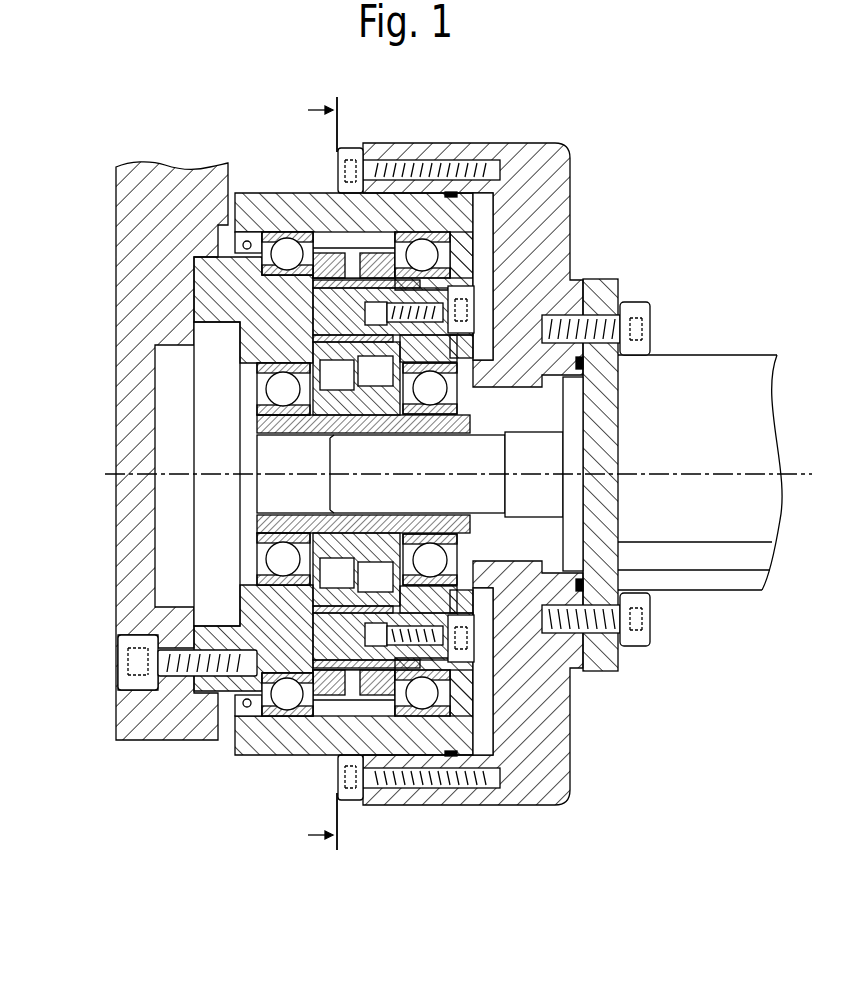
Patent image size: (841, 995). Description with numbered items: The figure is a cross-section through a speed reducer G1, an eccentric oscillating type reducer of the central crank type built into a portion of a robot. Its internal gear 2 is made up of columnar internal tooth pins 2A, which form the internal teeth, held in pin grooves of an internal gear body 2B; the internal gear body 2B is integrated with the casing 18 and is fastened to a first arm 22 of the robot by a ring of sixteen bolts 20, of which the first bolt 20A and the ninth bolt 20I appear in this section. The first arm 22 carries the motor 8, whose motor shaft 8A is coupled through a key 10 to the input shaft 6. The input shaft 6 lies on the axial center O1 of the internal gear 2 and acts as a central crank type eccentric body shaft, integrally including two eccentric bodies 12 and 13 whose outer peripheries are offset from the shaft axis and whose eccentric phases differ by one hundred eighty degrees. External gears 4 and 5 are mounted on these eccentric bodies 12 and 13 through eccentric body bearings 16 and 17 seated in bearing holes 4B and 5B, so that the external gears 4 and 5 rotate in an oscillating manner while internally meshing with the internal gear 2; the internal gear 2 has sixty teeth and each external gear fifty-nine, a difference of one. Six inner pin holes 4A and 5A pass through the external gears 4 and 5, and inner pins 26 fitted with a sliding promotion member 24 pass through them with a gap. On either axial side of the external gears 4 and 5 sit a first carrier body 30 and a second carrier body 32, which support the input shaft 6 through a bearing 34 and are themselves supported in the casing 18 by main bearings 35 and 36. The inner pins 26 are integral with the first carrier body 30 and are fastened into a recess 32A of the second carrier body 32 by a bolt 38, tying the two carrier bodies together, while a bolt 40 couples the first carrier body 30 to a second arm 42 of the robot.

The internal gear 2 is at (362, 195).
The internal tooth pins 2A is at (378, 238).
The internal gear body 2B is at (362, 195).
The casing 18 is at (410, 208).
The external gear 4 is at (341, 236).
The inner pin holes 4A is at (335, 360).
The bearing hole 4B is at (331, 562).
The external gear 5 is at (400, 254).
The inner pin holes 5A is at (458, 264).
The bearing hole 5B is at (376, 562).
The input shaft 6 is at (470, 419).
The motor 8 is at (728, 372).
The motor shaft 8A is at (482, 502).
The key 10 is at (421, 437).
The eccentric body 12 is at (337, 396).
The eccentric body 13 is at (373, 396).
The eccentric body bearing 16 is at (318, 358).
The eccentric body bearing 17 is at (378, 302).
The casing 20 is at (462, 146).
The ninth bolt 20I is at (352, 150).
The first bolt 20A is at (353, 797).
The first arm 22 is at (572, 218).
The sliding promotion member 24 is at (318, 233).
The inner pins 26 is at (498, 386).
The first carrier body 30 is at (215, 262).
The second carrier body 32 is at (486, 288).
The recess 32A is at (493, 342).
The bearing 34 is at (270, 393).
The main bearing 35 is at (283, 248).
The main bearing 36 is at (480, 238).
The bolt 38 is at (476, 316).
The bolt 40 is at (183, 673).
The second arm 42 is at (140, 182).
The speed reducer G1 is at (458, 473).
The axial center O1 is at (556, 472).